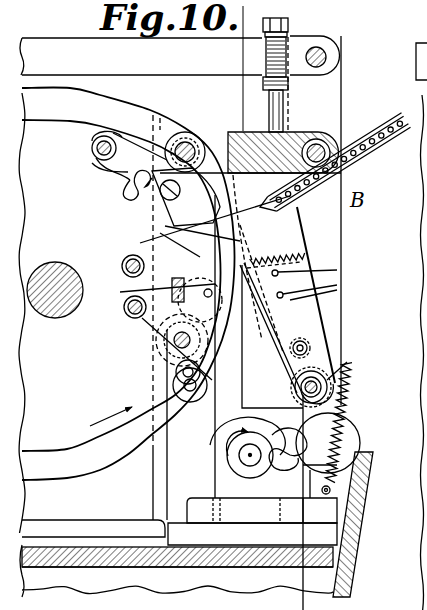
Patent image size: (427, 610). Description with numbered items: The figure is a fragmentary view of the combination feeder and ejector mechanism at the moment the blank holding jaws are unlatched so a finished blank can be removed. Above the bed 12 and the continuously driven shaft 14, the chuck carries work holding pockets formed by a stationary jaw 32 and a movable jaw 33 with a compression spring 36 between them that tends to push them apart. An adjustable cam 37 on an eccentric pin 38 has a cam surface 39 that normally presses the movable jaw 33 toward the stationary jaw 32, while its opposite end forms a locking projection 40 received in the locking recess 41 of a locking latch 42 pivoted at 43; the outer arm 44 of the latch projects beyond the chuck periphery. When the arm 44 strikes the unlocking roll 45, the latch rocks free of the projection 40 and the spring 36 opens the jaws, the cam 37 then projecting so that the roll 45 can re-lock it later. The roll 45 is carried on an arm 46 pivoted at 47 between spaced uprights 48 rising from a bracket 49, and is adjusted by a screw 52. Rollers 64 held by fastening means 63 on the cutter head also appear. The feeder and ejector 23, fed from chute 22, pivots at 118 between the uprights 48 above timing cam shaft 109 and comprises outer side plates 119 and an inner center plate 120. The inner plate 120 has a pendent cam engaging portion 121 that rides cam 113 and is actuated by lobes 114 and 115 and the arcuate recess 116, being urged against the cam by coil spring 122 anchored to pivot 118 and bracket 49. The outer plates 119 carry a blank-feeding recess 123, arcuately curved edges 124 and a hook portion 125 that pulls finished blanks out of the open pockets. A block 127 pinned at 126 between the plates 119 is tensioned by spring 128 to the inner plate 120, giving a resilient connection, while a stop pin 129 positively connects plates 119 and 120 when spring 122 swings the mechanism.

The top or bed 12 is at (243, 10).
The shaft 14 is at (60, 275).
The magazine or feed chute 22 is at (362, 160).
The combined feeder and ejector 23 is at (308, 228).
The stationary jaw 32 is at (156, 338).
The movable jaw 33 is at (143, 262).
The compression spring 36 is at (153, 332).
The adjustable cam 37 is at (186, 197).
The eccentric pin 38 is at (160, 200).
The cam surface 39 is at (162, 224).
The locking projection 40 is at (128, 185).
The locking recess 41 is at (112, 183).
The locking latch 42 is at (108, 166).
The latch pivot 43 is at (91, 152).
The outer arm 44 is at (166, 138).
The unlocking roll 45 is at (190, 133).
The arm 46 is at (238, 140).
The arm pivot 47 is at (317, 140).
The uprights 48 is at (326, 97).
The bracket 49 is at (292, 510).
The screw 52 is at (290, 22).
The removable fastening means 63 is at (160, 392).
The rollers 64 is at (198, 400).
The timing cam shaft 109 is at (246, 457).
The cam 113 is at (233, 478).
The lobe 114 is at (262, 510).
The lobe 115 is at (222, 432).
The arcuate recess 116 is at (270, 473).
The pivot 118 is at (322, 372).
The outer side plates 119 is at (320, 302).
The inner center plate 120 is at (261, 297).
The cam engaging lower portion 121 is at (328, 468).
The coil spring 122 is at (352, 385).
The blank-feeding recess 123 is at (176, 240).
The arcuately curved edges 124 is at (255, 210).
The hook portion 125 is at (197, 300).
The block pin 126 is at (322, 278).
The block 127 is at (320, 260).
The spring 128 is at (275, 248).
The stop pin 129 is at (322, 343).